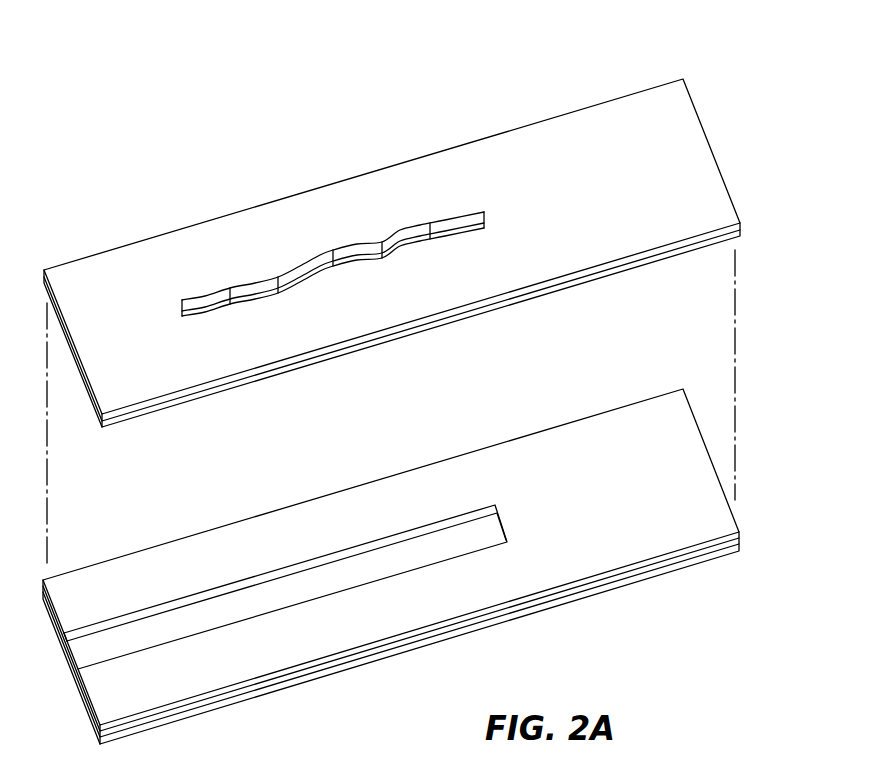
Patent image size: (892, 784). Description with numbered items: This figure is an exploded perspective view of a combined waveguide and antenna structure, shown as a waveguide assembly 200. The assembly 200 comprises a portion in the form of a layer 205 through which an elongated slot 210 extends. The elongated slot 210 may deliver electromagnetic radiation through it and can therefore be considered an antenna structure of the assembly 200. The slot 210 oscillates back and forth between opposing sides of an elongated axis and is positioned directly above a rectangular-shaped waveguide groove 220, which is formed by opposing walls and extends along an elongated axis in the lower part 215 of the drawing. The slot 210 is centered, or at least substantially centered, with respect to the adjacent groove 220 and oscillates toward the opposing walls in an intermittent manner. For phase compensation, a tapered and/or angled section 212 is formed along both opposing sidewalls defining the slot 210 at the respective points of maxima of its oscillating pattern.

The waveguide assembly 200 is at (709, 107).
The layer 205 is at (572, 132).
The elongated slot 210 is at (392, 234).
The tapered and/or angled section/surface 212 is at (343, 252).
The lower plate 215 is at (619, 423).
The waveguide groove 220 is at (475, 537).